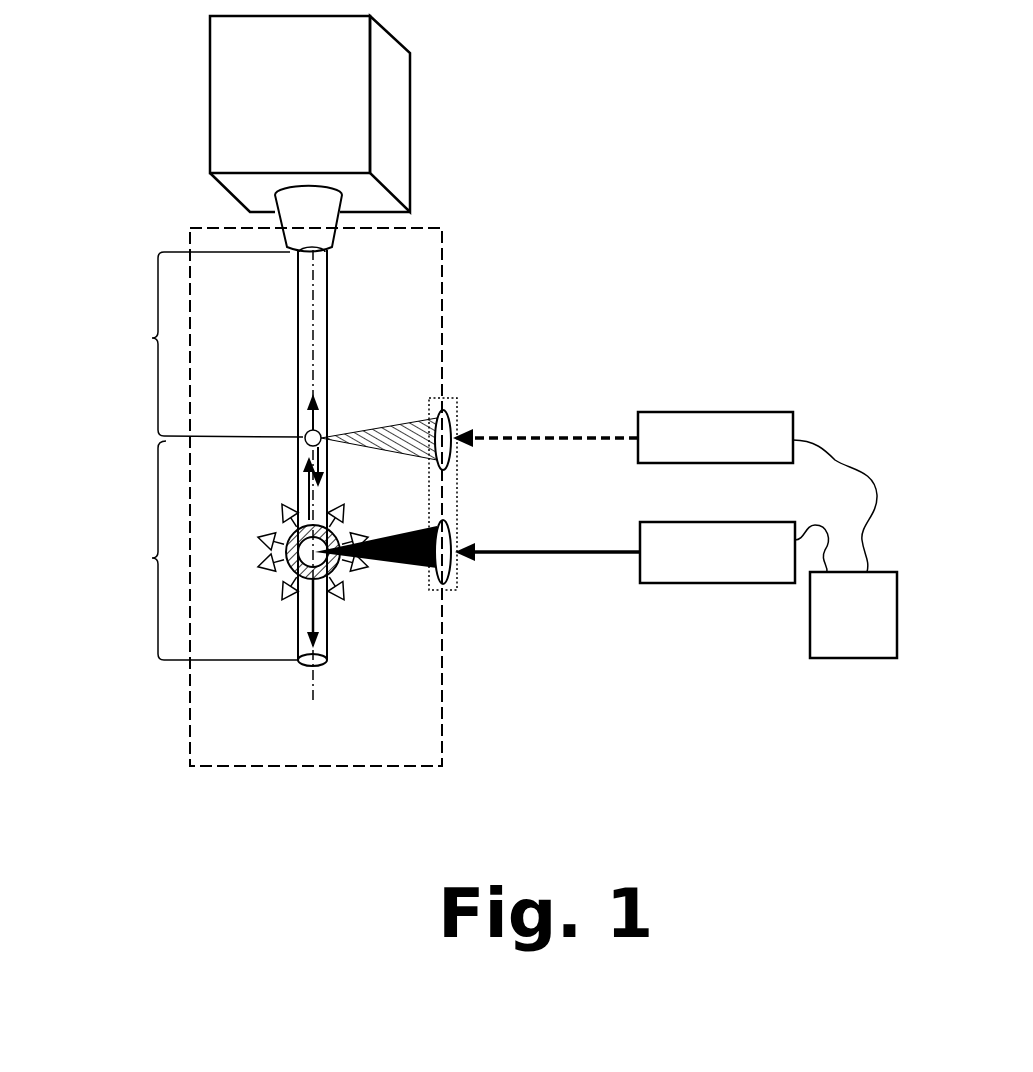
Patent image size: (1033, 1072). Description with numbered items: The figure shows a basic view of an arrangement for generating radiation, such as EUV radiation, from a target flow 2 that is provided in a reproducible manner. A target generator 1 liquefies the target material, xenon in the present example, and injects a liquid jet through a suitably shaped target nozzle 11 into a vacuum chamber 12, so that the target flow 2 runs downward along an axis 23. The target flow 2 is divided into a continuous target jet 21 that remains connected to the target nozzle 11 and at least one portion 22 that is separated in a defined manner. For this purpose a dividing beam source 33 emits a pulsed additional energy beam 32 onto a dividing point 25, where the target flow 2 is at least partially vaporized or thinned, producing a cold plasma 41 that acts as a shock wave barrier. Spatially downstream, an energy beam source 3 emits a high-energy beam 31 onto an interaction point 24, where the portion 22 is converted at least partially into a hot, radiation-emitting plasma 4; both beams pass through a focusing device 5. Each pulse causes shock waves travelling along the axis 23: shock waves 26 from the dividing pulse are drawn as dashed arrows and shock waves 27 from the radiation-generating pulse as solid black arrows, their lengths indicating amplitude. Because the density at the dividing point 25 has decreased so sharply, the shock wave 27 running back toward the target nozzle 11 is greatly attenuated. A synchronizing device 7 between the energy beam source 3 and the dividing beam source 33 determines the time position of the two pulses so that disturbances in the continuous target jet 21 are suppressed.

The target generator 1 is at (389, 128).
The target nozzle 11 is at (303, 232).
The target flow 2 is at (327, 346).
The continuous target jet 21 is at (149, 337).
The portion 22 is at (153, 558).
The axis 23 is at (313, 683).
The interaction point 24 is at (300, 566).
The dividing point 25 is at (306, 433).
The shock waves 26 is at (312, 413).
The shock waves 27 is at (308, 624).
The cold plasma 41 is at (322, 432).
The plasma 4 is at (326, 590).
The focusing device 5 is at (457, 420).
The vacuum chamber 12 is at (445, 638).
The additional energy beam 32 is at (582, 435).
The dividing beam source 33 is at (752, 423).
The high-energy beam 31 is at (558, 553).
The energy beam source 3 is at (692, 573).
The synchronizing device 7 is at (843, 652).